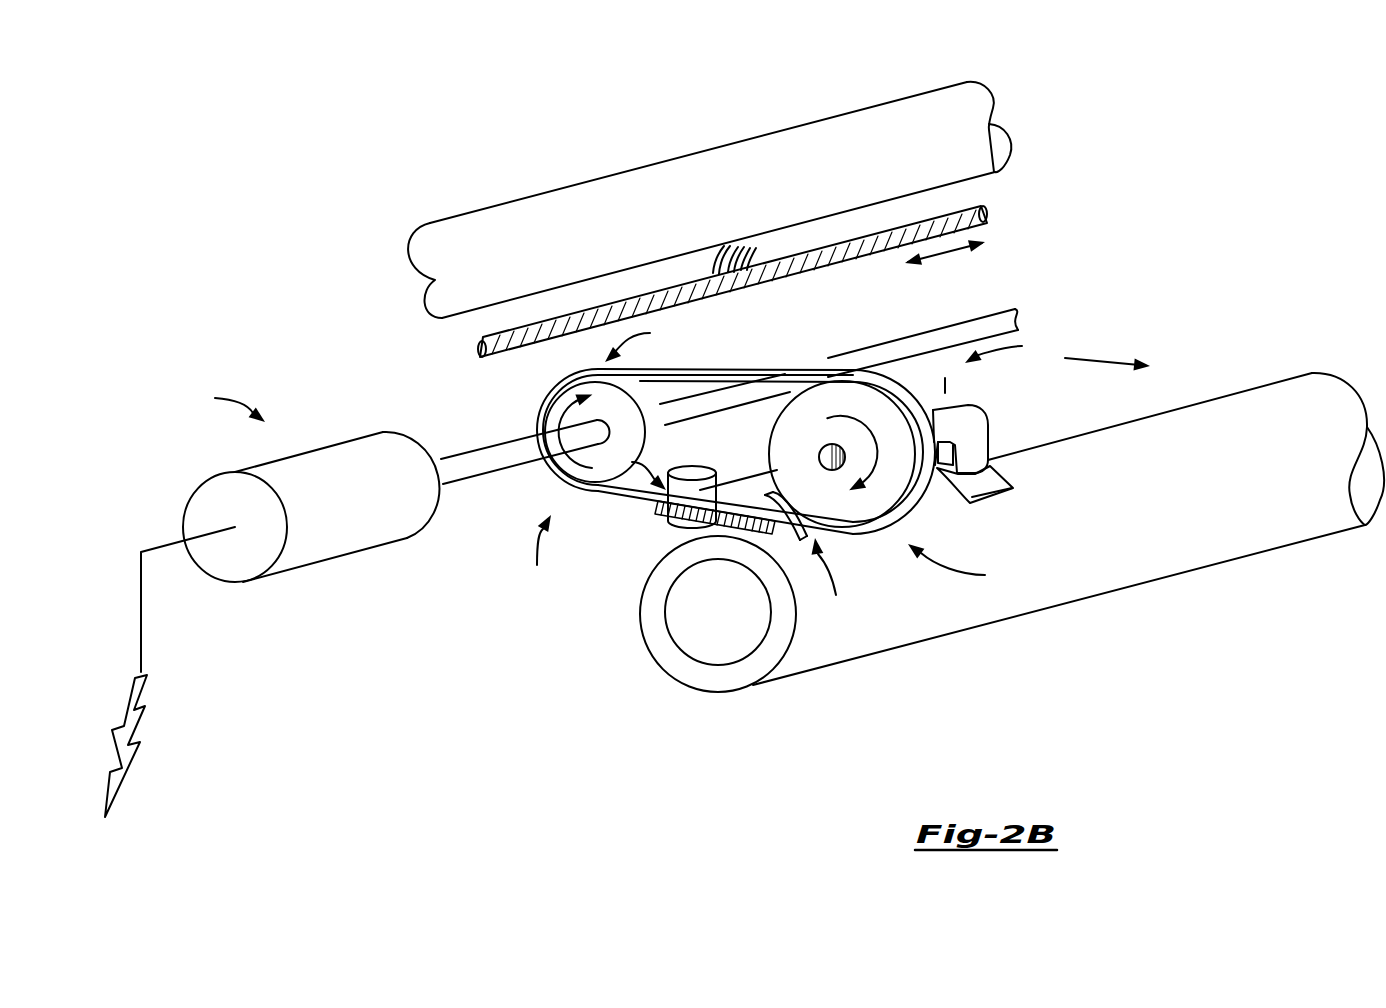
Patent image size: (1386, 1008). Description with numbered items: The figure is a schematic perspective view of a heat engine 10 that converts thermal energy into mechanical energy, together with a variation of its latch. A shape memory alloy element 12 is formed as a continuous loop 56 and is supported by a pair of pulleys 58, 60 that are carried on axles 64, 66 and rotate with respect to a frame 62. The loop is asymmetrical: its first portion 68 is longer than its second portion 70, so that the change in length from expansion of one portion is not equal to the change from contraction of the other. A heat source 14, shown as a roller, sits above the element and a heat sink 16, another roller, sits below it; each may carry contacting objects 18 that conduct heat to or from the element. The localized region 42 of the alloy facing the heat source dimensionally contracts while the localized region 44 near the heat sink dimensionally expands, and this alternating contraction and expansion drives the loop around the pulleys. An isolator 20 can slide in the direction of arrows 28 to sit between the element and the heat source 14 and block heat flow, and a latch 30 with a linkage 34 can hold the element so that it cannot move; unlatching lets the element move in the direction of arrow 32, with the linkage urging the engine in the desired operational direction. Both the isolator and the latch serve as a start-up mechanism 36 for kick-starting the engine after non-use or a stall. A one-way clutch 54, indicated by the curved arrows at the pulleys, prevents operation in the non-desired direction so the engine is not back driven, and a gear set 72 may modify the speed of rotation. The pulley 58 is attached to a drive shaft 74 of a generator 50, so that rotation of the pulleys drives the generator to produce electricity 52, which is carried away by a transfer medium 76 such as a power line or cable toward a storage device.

The heat engine 10 is at (535, 556).
The element 12 is at (576, 378).
The heat source 14 is at (825, 115).
The heat sink 16 is at (1270, 535).
The contacting objects 18 is at (752, 248).
The isolator 20 is at (968, 204).
The arrows 28 is at (945, 258).
The latch 30 is at (736, 530).
The arrow 32 is at (1106, 362).
The linkage 34 is at (667, 508).
The start-up mechanism 36 is at (427, 434).
The localized region 42 is at (818, 344).
The localized region 44 is at (833, 579).
The generator 50 is at (377, 542).
The electricity 52 is at (145, 727).
The clutch 54 is at (553, 408).
The continuous loop 56 is at (1010, 348).
The pulley 58 is at (688, 466).
The pulley 60 is at (778, 505).
The frame 62 is at (992, 438).
The axle 64 is at (732, 427).
The axle 66 is at (945, 378).
The first portion 68 is at (962, 567).
The second portion 70 is at (644, 339).
The gear set 72 is at (819, 457).
The drive shaft 74 is at (490, 470).
The transfer medium 76 is at (141, 636).